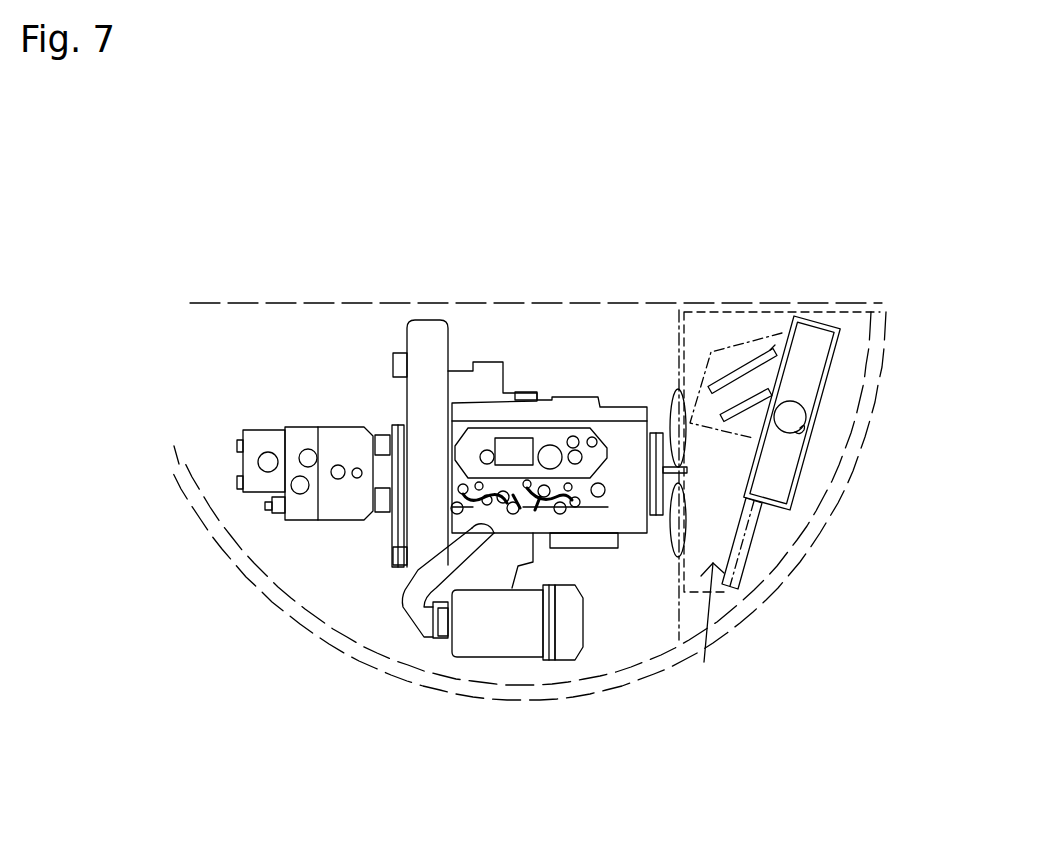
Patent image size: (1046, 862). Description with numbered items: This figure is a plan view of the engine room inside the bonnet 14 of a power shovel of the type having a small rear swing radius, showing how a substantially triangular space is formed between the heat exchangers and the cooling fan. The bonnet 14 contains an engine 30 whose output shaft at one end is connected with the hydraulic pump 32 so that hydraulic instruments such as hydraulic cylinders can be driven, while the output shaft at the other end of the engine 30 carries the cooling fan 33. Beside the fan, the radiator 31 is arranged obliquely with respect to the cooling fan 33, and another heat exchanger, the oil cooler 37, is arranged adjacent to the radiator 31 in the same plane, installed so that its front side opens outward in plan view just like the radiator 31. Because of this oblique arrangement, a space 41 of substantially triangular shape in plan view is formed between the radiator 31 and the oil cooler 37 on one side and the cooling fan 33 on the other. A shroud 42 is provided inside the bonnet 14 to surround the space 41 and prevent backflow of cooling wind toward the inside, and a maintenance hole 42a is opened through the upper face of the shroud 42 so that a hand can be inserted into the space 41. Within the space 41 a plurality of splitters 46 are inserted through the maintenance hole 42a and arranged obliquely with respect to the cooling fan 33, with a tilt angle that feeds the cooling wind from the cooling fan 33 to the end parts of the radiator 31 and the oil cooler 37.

The bonnet 14 is at (377, 675).
The engine 30 is at (550, 377).
The radiator 31 is at (817, 345).
The hydraulic pump 32 is at (343, 443).
The cooling fan 33 is at (673, 387).
The oil cooler 37 is at (752, 547).
The space 41 is at (704, 662).
The shroud 42 is at (767, 335).
The maintenance hole 42a is at (775, 345).
The splitters 46 is at (725, 405).